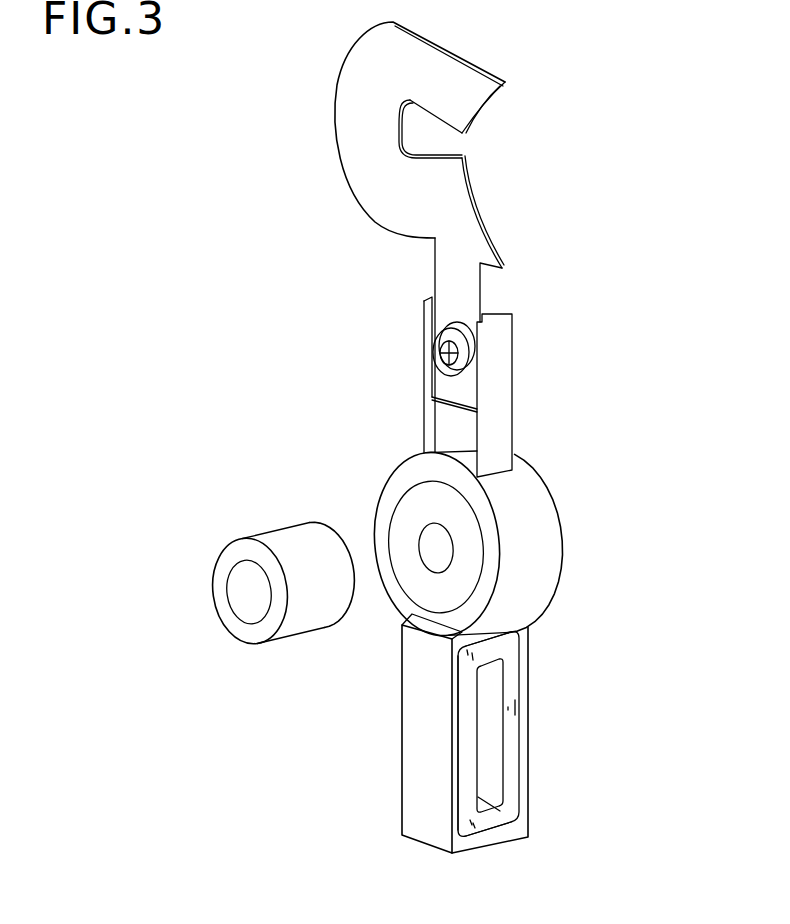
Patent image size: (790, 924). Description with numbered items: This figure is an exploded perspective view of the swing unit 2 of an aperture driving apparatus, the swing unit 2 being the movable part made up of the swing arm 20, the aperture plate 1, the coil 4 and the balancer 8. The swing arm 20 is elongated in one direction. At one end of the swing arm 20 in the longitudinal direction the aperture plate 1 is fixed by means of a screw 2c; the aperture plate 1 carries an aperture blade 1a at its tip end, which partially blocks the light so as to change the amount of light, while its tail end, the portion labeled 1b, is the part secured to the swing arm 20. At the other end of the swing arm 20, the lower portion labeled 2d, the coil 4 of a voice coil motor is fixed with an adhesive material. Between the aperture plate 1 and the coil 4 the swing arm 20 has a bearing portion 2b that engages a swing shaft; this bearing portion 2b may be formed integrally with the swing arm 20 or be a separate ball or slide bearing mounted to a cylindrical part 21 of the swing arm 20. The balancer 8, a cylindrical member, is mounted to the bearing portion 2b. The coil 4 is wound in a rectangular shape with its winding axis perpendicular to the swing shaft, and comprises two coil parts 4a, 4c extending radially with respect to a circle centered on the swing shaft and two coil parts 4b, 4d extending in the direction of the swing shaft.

The aperture plate 1 is at (469, 237).
The aperture blade 1a is at (458, 103).
The hook shaft portion 1b is at (433, 398).
The swing unit 2 is at (473, 434).
The swing arm 20 is at (497, 373).
The cylindrical part 21 is at (513, 498).
The bearing portion 2b is at (467, 550).
The screw 2c is at (433, 345).
The housing 2d is at (470, 733).
The coil 4 is at (471, 737).
The coil part 4a is at (470, 768).
The coil part 4b is at (497, 822).
The coil part 4c is at (512, 737).
The coil part 4d is at (497, 648).
The balancer 8 is at (280, 527).